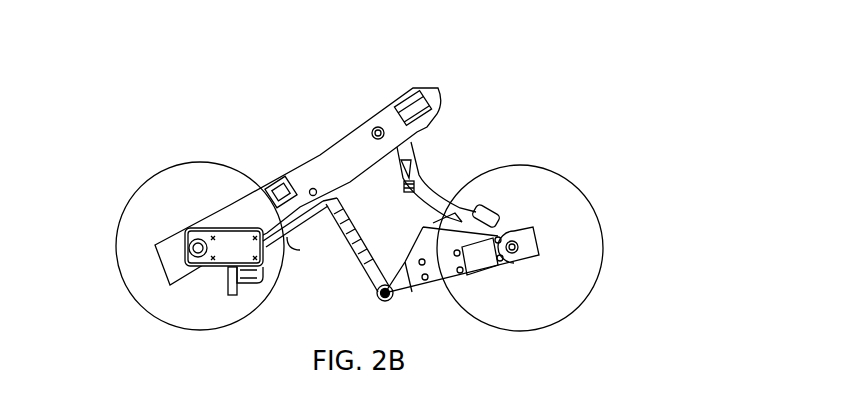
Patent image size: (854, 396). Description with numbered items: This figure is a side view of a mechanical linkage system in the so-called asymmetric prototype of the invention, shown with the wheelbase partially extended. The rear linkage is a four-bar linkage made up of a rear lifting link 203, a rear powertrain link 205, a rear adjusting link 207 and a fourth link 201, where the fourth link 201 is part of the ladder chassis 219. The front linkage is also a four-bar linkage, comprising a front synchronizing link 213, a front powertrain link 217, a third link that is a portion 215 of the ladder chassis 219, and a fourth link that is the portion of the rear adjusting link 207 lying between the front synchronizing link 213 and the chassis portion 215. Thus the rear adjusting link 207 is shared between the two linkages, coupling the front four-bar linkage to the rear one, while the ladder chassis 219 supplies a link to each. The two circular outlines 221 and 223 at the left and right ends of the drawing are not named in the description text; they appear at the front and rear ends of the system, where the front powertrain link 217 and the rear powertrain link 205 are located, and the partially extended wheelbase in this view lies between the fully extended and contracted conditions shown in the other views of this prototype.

The fourth link 201 is at (338, 150).
The rear lifting link 203 is at (440, 195).
The rear powertrain link 205 is at (428, 283).
The rear adjusting link 207 is at (370, 270).
The front synchronizing link 213 is at (293, 237).
The portion of the ladder chassis 215 is at (238, 250).
The front powertrain link 217 is at (227, 223).
The ladder chassis 219 is at (420, 83).
The front wheel 221 is at (118, 228).
The rear wheel 223 is at (567, 207).